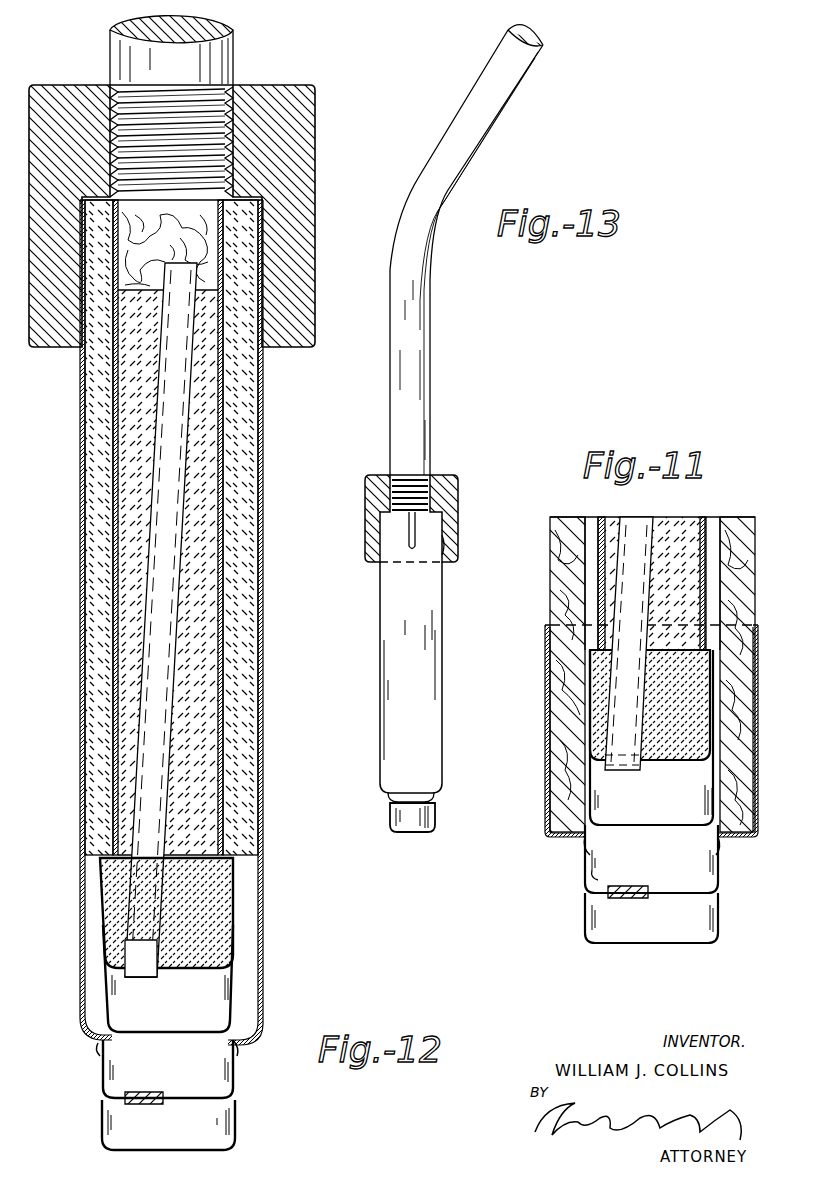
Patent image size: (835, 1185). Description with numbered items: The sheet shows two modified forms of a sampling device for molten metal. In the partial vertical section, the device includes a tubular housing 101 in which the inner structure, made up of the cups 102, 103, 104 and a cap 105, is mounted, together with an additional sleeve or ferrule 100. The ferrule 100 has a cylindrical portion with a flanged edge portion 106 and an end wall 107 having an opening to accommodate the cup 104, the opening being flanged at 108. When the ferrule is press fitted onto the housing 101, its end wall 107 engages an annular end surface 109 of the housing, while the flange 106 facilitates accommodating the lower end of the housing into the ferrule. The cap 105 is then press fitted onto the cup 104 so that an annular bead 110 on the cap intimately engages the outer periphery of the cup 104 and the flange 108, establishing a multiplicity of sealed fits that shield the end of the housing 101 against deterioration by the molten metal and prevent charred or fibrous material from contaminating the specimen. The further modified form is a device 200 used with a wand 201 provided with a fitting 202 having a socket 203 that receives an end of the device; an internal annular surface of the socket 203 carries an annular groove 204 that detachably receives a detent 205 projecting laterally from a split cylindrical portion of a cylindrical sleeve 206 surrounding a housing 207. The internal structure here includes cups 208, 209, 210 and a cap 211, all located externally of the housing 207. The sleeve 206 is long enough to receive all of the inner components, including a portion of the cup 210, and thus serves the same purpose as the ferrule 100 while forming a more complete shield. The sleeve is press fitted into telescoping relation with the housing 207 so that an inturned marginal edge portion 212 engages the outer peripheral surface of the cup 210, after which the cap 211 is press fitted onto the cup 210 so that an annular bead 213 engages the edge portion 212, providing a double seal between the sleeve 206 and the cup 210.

In FIG. 11, the sleeve or ferrule 100 is at (546, 692).
In FIG. 11, the tubular housing 101 is at (550, 584).
In FIG. 11, the cup 102 is at (590, 660).
In FIG. 11, the cup 103 is at (590, 770).
In FIG. 11, the cup 104 is at (600, 880).
In FIG. 11, the cap 105 is at (584, 920).
In FIG. 11, the flanged edge portion 106 is at (546, 625).
In FIG. 11, the end wall 107 is at (738, 838).
In FIG. 11, the flange 108 is at (582, 844).
In FIG. 11, the annular end surface 109 is at (585, 815).
In FIG. 11, the annular bead 110 is at (590, 858).
In FIG. 12, the device 200 is at (263, 425).
In FIG. 13, the device 200 is at (373, 714).
In FIG. 12, the wand 201 is at (235, 40).
In FIG. 13, the wand 201 is at (418, 374).
In FIG. 12, the fitting 202 is at (275, 92).
In FIG. 13, the fitting 202 is at (450, 478).
In FIG. 13, the socket 203 is at (368, 535).
In FIG. 13, the annular groove 204 is at (448, 543).
In FIG. 12, the detent 205 is at (262, 280).
In FIG. 13, the detent 205 is at (432, 528).
In FIG. 12, the cylindrical sleeve 206 is at (272, 478).
In FIG. 13, the cylindrical sleeve 206 is at (382, 736).
In FIG. 12, the housing 207 is at (248, 460).
In FIG. 12, the cup 208 is at (238, 880).
In FIG. 12, the cup 209 is at (235, 966).
In FIG. 12, the cup 210 is at (235, 1035).
In FIG. 12, the cap 211 is at (236, 1125).
In FIG. 13, the cap 211 is at (389, 818).
In FIG. 12, the inturned marginal edge portion 212 is at (238, 1050).
In FIG. 12, the annular bead 213 is at (236, 1068).